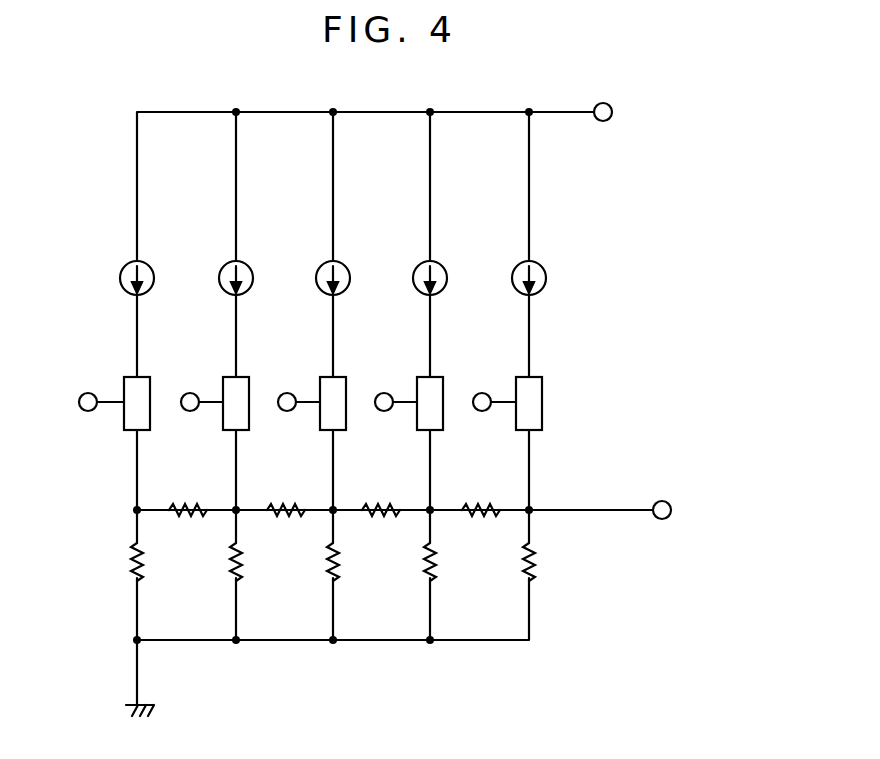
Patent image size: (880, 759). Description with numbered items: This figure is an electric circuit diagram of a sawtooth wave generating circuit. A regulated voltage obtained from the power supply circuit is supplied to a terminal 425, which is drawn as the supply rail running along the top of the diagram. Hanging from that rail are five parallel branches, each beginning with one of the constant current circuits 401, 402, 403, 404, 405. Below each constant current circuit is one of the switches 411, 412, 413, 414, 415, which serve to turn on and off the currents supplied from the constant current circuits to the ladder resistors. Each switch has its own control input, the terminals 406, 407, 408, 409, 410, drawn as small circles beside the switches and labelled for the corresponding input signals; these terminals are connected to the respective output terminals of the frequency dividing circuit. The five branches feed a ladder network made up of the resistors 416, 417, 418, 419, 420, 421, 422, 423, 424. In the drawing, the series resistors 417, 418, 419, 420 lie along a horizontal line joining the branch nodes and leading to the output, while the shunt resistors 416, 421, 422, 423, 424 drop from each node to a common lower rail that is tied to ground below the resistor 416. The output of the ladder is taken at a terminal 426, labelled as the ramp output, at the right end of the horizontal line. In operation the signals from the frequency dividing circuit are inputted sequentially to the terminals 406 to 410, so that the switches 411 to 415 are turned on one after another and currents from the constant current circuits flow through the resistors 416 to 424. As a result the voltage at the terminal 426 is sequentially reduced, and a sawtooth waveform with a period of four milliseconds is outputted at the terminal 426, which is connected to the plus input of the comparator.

The constant current circuit 401 is at (126, 268).
The constant current circuit 402 is at (225, 268).
The constant current circuit 403 is at (322, 268).
The constant current circuit 404 is at (419, 268).
The constant current circuit 405 is at (518, 268).
The terminal 406 is at (84, 411).
The terminal 407 is at (186, 411).
The terminal 408 is at (284, 411).
The terminal 409 is at (381, 411).
The terminal 410 is at (484, 411).
The switch 411 is at (141, 376).
The switch 412 is at (240, 376).
The switch 413 is at (338, 376).
The switch 414 is at (435, 376).
The switch 415 is at (535, 376).
The ladder resistor 416 is at (128, 575).
The ladder resistor 417 is at (171, 504).
The ladder resistor 418 is at (269, 504).
The ladder resistor 419 is at (365, 504).
The ladder resistor 420 is at (467, 504).
The ladder resistor 421 is at (224, 573).
The ladder resistor 422 is at (318, 563).
The ladder resistor 423 is at (416, 563).
The ladder resistor 424 is at (515, 563).
The terminal 425 is at (610, 120).
The terminal 426 is at (662, 500).